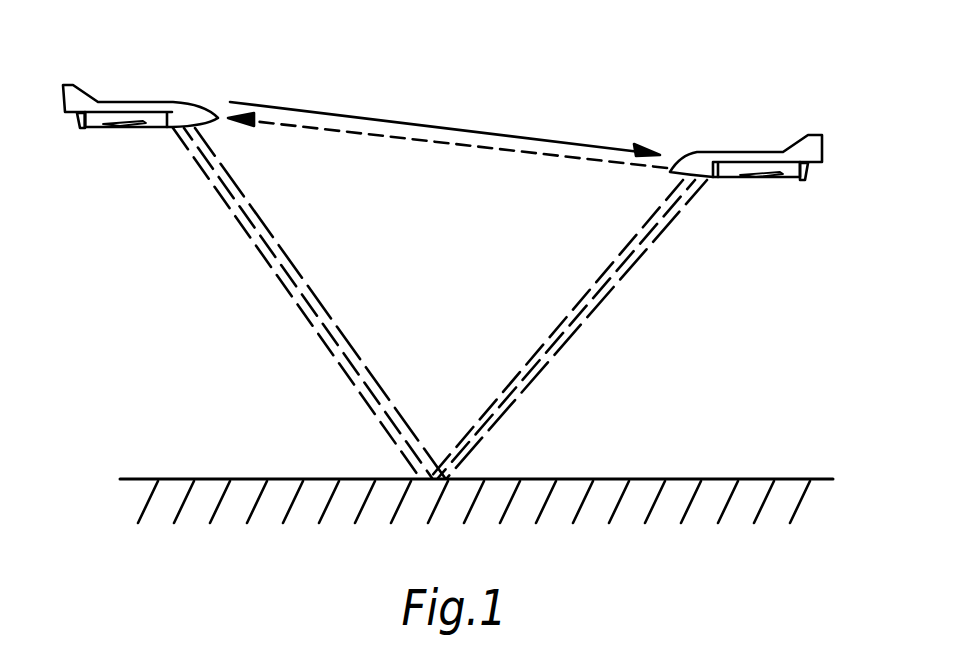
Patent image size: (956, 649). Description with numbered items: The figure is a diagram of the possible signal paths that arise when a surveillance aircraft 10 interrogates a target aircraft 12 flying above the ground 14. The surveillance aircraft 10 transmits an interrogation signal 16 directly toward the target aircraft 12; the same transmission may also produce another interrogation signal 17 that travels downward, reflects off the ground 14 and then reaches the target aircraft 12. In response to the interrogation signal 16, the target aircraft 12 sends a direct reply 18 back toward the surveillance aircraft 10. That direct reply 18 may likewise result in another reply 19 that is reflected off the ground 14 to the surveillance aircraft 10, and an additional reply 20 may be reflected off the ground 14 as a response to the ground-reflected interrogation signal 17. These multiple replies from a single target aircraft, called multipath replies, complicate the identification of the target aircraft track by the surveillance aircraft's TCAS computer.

The surveillance aircraft 10 is at (196, 103).
The target aircraft 12 is at (788, 178).
The ground 14 is at (773, 507).
The interrogation signal 16 is at (310, 112).
The interrogation signal 17 is at (287, 280).
The direct reply 18 is at (557, 158).
The reply 19 is at (540, 342).
The reply 20 is at (595, 310).